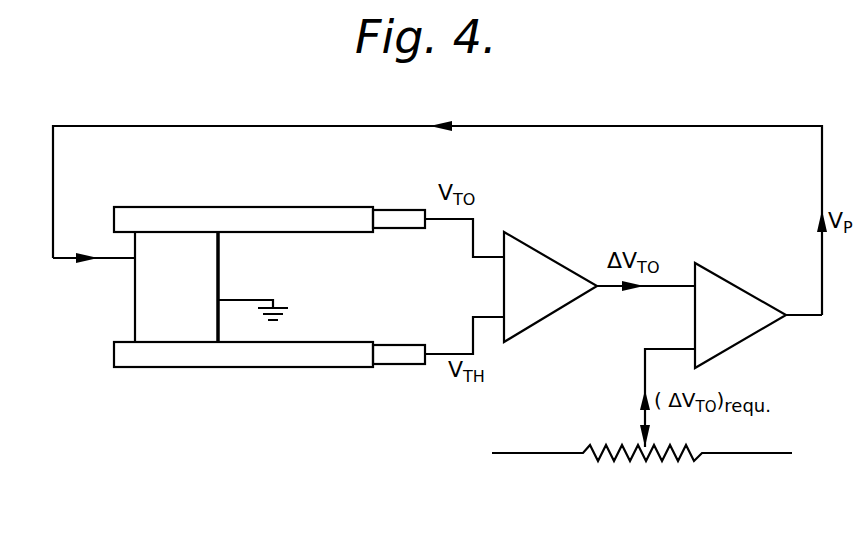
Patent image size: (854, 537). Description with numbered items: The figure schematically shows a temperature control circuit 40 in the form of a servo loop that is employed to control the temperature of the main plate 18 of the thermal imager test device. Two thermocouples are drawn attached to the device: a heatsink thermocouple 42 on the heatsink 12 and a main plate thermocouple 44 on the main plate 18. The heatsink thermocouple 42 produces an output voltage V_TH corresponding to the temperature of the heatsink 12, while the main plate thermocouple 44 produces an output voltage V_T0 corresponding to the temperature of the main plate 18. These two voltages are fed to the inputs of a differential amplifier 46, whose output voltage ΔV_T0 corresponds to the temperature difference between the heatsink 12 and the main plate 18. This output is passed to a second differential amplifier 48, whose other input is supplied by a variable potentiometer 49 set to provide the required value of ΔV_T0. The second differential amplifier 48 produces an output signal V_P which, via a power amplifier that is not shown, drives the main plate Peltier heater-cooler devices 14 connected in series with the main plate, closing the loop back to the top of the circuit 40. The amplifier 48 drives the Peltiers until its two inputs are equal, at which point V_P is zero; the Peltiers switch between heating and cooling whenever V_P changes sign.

The temperature control circuit 40 is at (107, 108).
The main plate 18 is at (143, 207).
The heatsink 12 is at (188, 357).
The main plate Peltier heater-cooler device 14 is at (137, 296).
The main plate thermocouple 44 is at (408, 224).
The heatsink thermocouple 42 is at (412, 357).
The differential amplifier 46 is at (555, 309).
The second differential amplifier 48 is at (750, 293).
The variable potentiometer 49 is at (615, 458).